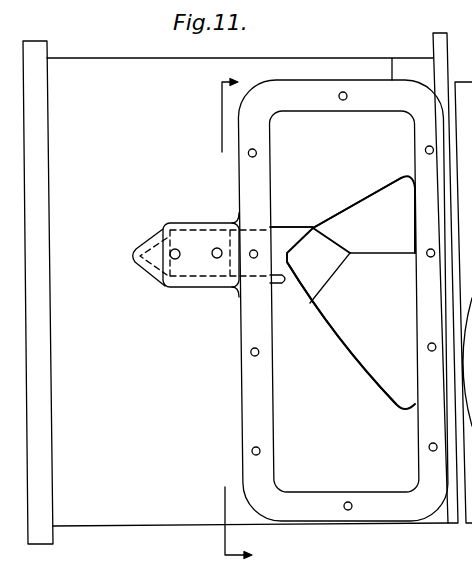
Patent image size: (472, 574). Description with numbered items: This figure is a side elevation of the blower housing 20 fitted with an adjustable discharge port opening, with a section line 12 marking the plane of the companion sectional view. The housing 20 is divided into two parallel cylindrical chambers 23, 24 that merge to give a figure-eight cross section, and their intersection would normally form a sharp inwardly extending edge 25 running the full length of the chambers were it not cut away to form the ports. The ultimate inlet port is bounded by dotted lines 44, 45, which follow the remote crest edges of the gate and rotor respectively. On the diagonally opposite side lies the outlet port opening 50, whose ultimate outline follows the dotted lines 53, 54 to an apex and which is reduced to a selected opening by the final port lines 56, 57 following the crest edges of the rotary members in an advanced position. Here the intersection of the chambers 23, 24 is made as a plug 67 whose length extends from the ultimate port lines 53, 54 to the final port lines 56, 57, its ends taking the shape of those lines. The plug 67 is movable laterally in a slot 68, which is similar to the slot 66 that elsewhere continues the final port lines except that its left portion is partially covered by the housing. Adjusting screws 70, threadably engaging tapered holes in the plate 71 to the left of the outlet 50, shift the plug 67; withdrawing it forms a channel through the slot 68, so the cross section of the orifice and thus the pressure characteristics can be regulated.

The section line 12 is at (253, 317).
The housing 20 is at (130, 471).
The cylindrical chamber 23 is at (397, 218).
The cylindrical chamber 24 is at (398, 367).
The intersection edge 25 is at (372, 254).
The ultimate inlet port line 44 is at (334, 239).
The ultimate inlet port line 45 is at (323, 287).
The outlet port opening 50 is at (360, 471).
The ultimate port line 53 is at (146, 271).
The ultimate port line 54 is at (153, 236).
The final port line 56 is at (352, 358).
The final port line 57 is at (383, 189).
The slot 66 is at (278, 263).
The plug 67 is at (278, 240).
The slot 68 is at (250, 230).
The adjusting screws 70 is at (215, 248).
The plate 71 is at (189, 281).